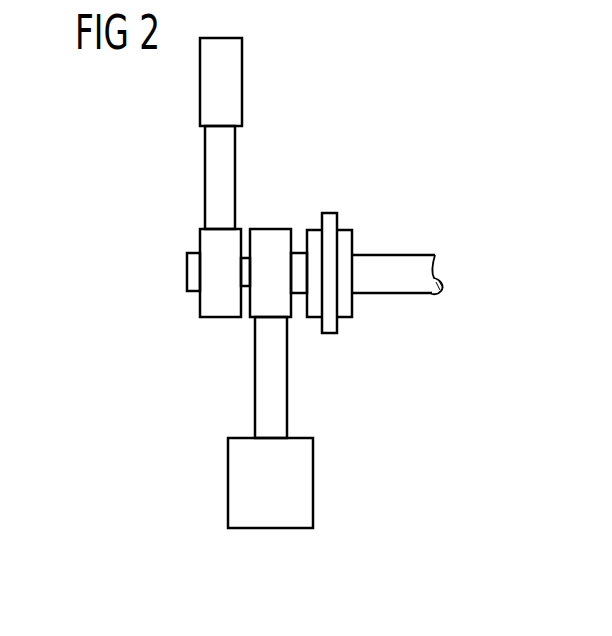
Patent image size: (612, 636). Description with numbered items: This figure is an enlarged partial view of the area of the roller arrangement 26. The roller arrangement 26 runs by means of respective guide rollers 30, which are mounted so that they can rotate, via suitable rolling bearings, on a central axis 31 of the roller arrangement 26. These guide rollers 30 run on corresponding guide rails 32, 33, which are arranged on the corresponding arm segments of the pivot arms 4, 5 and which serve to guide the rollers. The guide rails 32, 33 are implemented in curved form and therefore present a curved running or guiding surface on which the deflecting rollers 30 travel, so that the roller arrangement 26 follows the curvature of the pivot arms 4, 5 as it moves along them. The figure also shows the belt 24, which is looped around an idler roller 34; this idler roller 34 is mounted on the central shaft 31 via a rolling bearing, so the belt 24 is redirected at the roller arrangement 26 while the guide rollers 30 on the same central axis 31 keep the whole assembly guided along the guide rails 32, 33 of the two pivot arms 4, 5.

The pivot arm 4 is at (228, 81).
The pivot arm 5 is at (292, 487).
The belt 24 is at (330, 220).
The roller arrangement 26 is at (418, 320).
The guide roller 30 is at (270, 242).
The central axis 31 is at (398, 268).
The guide rail 32 is at (217, 180).
The guide rail 33 is at (257, 397).
The idler roller 34 is at (343, 310).